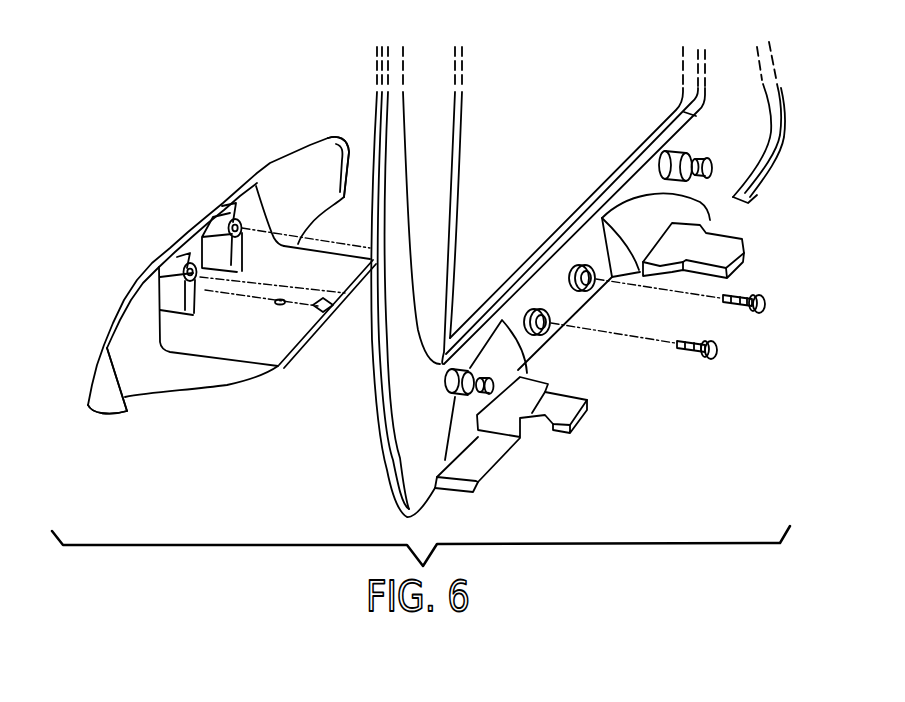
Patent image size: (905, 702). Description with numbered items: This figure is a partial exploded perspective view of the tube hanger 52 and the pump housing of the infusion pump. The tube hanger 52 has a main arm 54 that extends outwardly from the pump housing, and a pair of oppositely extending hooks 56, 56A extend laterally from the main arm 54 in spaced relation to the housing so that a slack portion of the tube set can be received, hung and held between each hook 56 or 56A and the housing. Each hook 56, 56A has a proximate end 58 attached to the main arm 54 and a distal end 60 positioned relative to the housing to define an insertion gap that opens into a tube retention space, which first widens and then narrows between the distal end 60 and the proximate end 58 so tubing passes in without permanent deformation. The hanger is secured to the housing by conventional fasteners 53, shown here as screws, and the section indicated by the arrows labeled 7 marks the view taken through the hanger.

The tube hanger 52 is at (204, 395).
The fastener 53 is at (718, 343).
The main arm 54 is at (288, 366).
The hook 56 is at (285, 155).
The hook 56A is at (118, 300).
The proximate end 58 is at (262, 166).
The distal end 60 is at (346, 140).
The section line for FIG. 7 is at (200, 180).